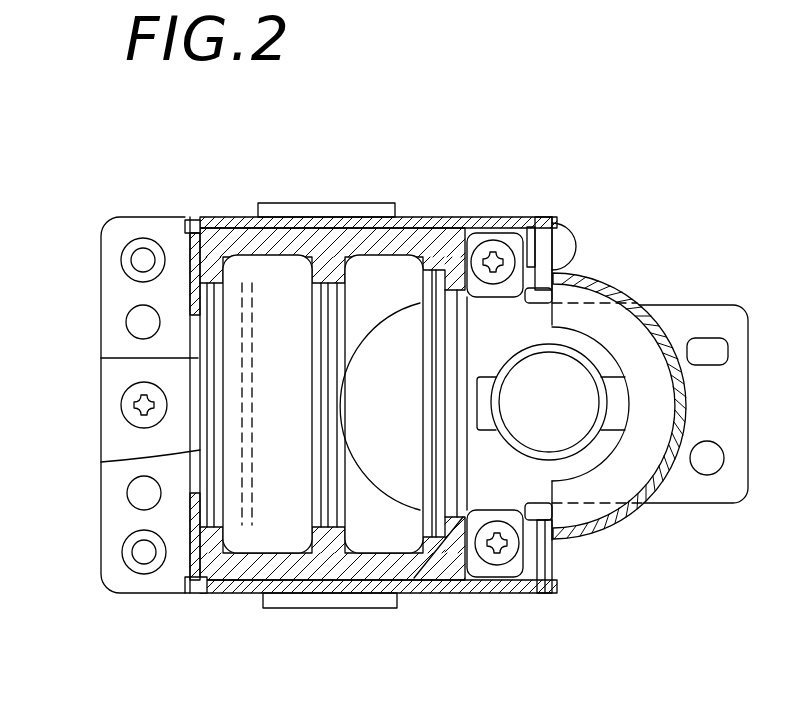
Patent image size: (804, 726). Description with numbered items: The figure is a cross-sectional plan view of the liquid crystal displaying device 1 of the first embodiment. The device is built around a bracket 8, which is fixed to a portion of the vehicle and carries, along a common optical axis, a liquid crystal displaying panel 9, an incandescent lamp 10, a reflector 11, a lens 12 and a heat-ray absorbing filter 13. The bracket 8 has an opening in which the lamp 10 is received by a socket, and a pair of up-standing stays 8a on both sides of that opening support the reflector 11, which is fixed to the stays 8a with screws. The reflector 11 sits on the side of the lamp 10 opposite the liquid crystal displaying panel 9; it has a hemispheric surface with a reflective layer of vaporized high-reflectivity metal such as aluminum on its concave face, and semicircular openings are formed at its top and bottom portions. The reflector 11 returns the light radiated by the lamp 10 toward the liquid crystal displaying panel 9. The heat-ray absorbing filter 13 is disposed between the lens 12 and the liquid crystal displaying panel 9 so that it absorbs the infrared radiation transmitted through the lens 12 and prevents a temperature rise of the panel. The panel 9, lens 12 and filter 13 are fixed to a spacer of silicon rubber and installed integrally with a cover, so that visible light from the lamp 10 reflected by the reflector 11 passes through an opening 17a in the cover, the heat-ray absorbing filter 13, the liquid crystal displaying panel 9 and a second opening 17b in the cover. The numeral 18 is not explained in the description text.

The liquid crystal displaying device 1 is at (446, 152).
The bracket 8 is at (148, 213).
The up-standing stays 8a is at (545, 216).
The liquid crystal displaying panel 9 is at (103, 465).
The incandescent lamp 10 is at (583, 381).
The reflector 11 is at (612, 524).
The lens 12 is at (402, 500).
The heat-ray absorbing filter 13 is at (313, 592).
The opening 17a is at (460, 326).
The opening 17b is at (190, 358).
The screw 18 is at (497, 563).